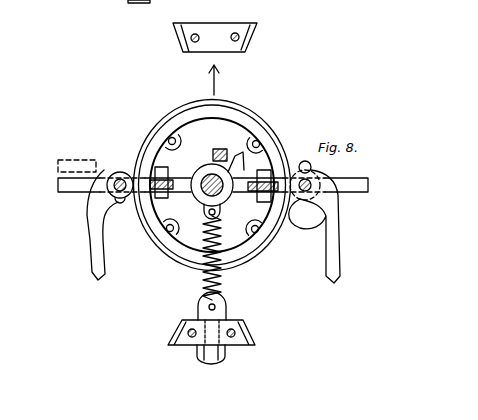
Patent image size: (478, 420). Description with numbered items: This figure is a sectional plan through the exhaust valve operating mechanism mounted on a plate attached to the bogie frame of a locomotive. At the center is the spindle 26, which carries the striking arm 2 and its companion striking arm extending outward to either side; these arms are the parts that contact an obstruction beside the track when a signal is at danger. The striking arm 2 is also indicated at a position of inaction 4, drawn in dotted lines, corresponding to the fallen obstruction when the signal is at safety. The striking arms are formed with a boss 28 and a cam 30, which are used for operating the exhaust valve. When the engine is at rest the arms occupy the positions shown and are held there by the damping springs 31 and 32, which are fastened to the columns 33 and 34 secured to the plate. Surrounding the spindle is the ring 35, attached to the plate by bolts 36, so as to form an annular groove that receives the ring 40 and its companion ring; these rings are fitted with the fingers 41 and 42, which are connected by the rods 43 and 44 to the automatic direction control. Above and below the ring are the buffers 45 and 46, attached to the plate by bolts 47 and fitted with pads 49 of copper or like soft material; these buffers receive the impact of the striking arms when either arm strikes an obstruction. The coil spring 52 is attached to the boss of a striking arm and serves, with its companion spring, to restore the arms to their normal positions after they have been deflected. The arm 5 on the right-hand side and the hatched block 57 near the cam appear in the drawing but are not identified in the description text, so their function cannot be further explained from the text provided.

The striking arm 2 is at (73, 186).
The position of inaction 4 is at (66, 160).
The bar 5 is at (356, 191).
The central spindle 26 is at (207, 193).
The boss 28 is at (205, 174).
The cam 30 is at (232, 157).
The damping spring 31 is at (157, 170).
The damping spring 32 is at (268, 168).
The column 33 is at (152, 183).
The column 34 is at (276, 172).
The ring 35 is at (202, 115).
The bolt 36 is at (259, 142).
The ring 40 is at (282, 222).
The finger 41 is at (120, 201).
The finger 42 is at (311, 166).
The rod 43 is at (97, 258).
The rod 44 is at (333, 262).
The buffer 45 is at (212, 36).
The buffer 46 is at (230, 345).
The bolt 47 is at (236, 36).
The pad 49 is at (181, 46).
The coil spring 52 is at (222, 276).
The stop block 57 is at (222, 150).